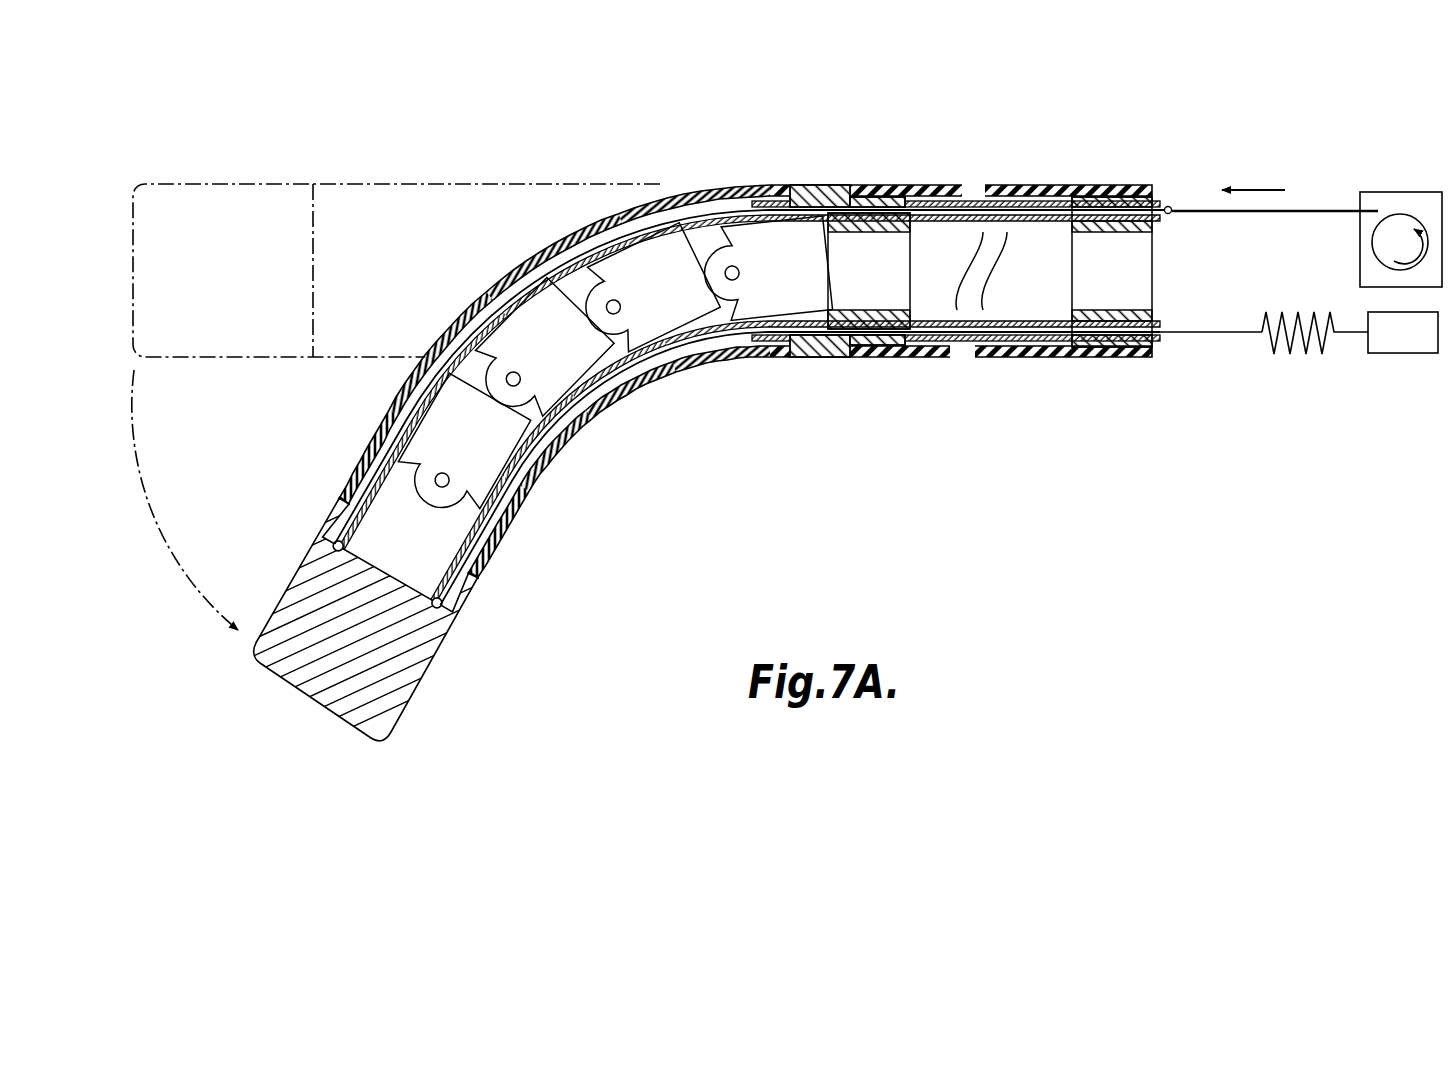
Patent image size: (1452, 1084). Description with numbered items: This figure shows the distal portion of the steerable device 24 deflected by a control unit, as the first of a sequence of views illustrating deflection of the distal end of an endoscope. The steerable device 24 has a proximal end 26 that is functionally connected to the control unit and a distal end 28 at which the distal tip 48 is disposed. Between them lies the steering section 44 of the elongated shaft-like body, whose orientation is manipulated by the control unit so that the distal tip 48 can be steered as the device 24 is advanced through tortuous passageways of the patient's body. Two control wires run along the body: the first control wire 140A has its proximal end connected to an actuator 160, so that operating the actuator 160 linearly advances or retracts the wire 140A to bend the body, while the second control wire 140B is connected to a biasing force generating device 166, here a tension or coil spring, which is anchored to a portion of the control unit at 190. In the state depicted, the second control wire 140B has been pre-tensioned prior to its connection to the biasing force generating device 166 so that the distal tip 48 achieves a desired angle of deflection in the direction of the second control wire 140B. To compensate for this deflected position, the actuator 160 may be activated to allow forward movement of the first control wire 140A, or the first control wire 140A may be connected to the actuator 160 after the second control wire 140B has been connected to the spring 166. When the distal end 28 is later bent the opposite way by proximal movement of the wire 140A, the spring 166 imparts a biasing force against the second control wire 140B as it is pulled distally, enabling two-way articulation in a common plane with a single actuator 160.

The steerable device 24 is at (607, 488).
The proximal end 26 is at (1105, 184).
The distal end 28 is at (330, 183).
The steering section 44 is at (621, 407).
The distal tip 48 is at (236, 184).
The first control wire 140A is at (1220, 213).
The second control wire 140B is at (1222, 332).
The actuator 160 is at (1409, 178).
The biasing force generating device 166 is at (1291, 358).
The anchor portion of the control unit 190 is at (1405, 353).